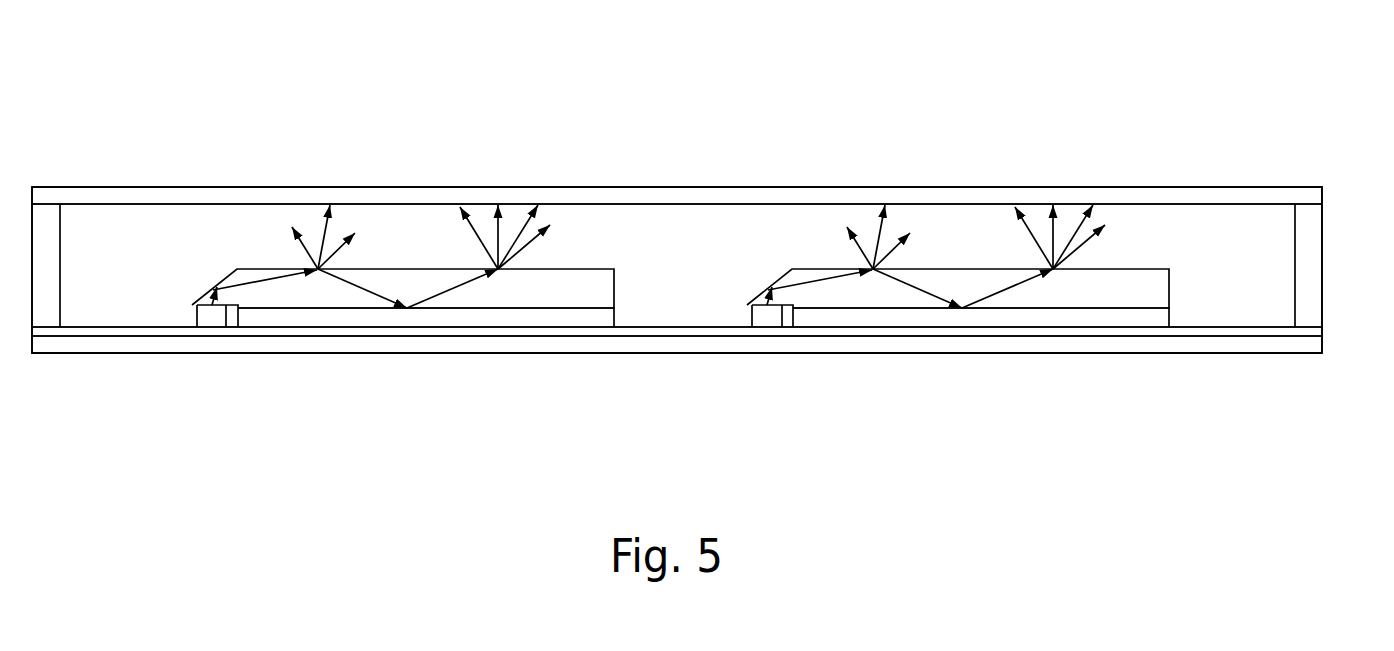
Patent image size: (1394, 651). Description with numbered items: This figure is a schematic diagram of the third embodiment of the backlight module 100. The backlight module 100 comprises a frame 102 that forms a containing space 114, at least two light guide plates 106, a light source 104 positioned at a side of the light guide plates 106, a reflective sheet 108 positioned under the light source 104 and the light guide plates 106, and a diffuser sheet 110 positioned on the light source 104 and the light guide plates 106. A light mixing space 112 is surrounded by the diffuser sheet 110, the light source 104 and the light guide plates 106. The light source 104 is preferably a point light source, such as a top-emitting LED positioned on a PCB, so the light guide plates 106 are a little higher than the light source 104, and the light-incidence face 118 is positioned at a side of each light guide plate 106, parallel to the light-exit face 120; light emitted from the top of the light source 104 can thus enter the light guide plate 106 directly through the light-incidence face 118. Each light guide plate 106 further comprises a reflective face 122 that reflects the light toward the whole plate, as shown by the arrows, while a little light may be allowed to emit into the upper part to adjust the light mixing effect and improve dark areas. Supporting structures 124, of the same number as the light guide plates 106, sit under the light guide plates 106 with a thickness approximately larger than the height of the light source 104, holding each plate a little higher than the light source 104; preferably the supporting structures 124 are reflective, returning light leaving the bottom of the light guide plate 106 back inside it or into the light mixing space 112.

The backlight module 100 is at (1230, 127).
The frame 102 is at (1312, 248).
The light source 104 is at (220, 322).
The light guide plate 106 is at (487, 297).
The reflective sheet 108 is at (650, 327).
The diffuser sheet 110 is at (604, 197).
The light mixing space 112 is at (690, 225).
The containing space 114 is at (1267, 268).
The light-incidence face 118 is at (222, 305).
The light-exit face 120 is at (407, 270).
The reflective face 122 is at (773, 288).
The supporting structure 124 is at (537, 315).